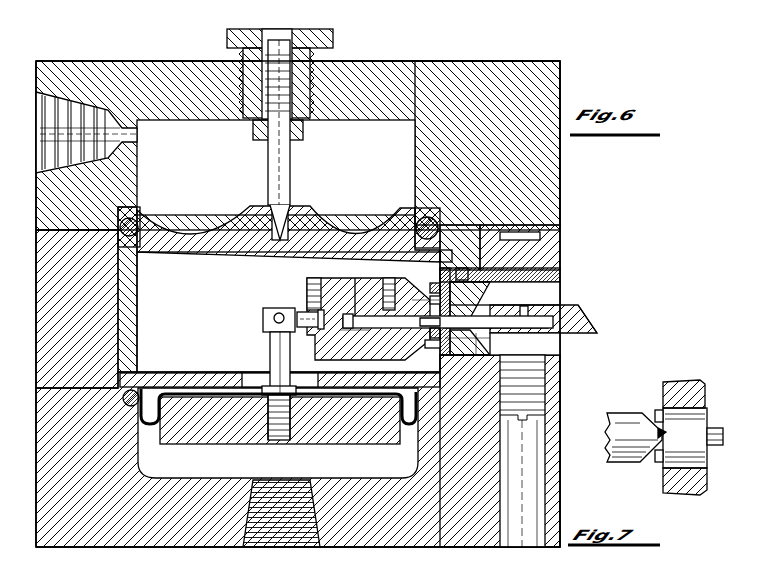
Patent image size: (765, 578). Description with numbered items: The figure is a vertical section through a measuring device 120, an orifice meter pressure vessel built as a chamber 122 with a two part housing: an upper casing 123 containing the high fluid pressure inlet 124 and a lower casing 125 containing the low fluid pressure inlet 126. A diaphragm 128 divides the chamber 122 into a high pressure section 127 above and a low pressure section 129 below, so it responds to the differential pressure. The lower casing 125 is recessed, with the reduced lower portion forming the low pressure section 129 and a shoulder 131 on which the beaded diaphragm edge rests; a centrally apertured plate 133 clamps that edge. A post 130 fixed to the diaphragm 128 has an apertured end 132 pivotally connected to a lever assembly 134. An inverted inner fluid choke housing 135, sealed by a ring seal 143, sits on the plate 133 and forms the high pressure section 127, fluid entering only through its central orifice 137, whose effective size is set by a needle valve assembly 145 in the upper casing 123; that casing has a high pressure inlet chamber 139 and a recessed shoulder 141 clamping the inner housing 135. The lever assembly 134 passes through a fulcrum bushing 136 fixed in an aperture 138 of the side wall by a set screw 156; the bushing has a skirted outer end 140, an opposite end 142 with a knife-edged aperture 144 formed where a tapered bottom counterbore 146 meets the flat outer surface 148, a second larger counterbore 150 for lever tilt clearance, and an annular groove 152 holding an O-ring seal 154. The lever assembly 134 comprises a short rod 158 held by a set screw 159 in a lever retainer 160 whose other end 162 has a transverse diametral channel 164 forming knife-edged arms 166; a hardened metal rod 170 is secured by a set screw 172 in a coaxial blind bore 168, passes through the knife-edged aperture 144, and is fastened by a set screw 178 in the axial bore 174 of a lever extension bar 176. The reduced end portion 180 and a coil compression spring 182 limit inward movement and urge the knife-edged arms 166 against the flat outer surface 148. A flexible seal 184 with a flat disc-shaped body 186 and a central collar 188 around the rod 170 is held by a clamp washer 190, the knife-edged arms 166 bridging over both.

In FIG. 6, the measuring device 120 is at (92, 57).
In FIG. 6, the chamber 122 is at (427, 68).
In FIG. 6, the upper casing 123 is at (172, 70).
In FIG. 6, the high fluid pressure inlet 124 is at (45, 160).
In FIG. 6, the lower casing 125 is at (85, 334).
In FIG. 6, the low fluid pressure inlet 126 is at (296, 540).
In FIG. 6, the high pressure section 127 is at (200, 314).
In FIG. 6, the diaphragm 128 is at (278, 416).
In FIG. 6, the low pressure section 129 is at (222, 462).
In FIG. 6, the post 130 is at (268, 345).
In FIG. 6, the shoulder 131 is at (135, 410).
In FIG. 6, the apertured end 132 is at (279, 312).
In FIG. 6, the plate 133 is at (185, 371).
In FIG. 6, the lever assembly 134 is at (545, 292).
In FIG. 6, the inner fluid choke housing 135 is at (204, 232).
In FIG. 6, the fulcrum bushing 136 is at (530, 266).
In FIG. 7, the fulcrum bushing 136 is at (676, 384).
In FIG. 6, the orifice 137 is at (290, 218).
In FIG. 6, the aperture 138 is at (556, 270).
In FIG. 7, the aperture 138 is at (706, 398).
In FIG. 6, the high pressure inlet chamber 139 is at (360, 124).
In FIG. 6, the skirted outer end 140 is at (556, 346).
In FIG. 6, the recessed shoulder 141 is at (416, 210).
In FIG. 6, the opposite end 142 is at (460, 247).
In FIG. 6, the ring seal 143 is at (137, 218).
In FIG. 6, the knife-edged aperture 144 is at (470, 342).
In FIG. 6, the needle valve assembly 145 is at (262, 148).
In FIG. 6, the tapered bottom counterbore 146 is at (505, 293).
In FIG. 6, the flat outer surface 148 is at (470, 300).
In FIG. 7, the flat outer surface 148 is at (659, 415).
In FIG. 6, the second larger counterbore 150 is at (545, 338).
In FIG. 6, the annular groove 152 is at (462, 272).
In FIG. 6, the O-ring seal 154 is at (458, 252).
In FIG. 6, the set screw 156 is at (528, 413).
In FIG. 6, the short rod 158 is at (300, 312).
In FIG. 6, the set screw 159 is at (312, 280).
In FIG. 6, the lever retainer 160 is at (332, 280).
In FIG. 7, the lever retainer 160 is at (628, 414).
In FIG. 6, the other end 162 is at (398, 283).
In FIG. 6, the transverse diametral channel 164 is at (428, 279).
In FIG. 6, the knife-edged arms 166 is at (430, 332).
In FIG. 7, the knife-edged arms 166 is at (667, 434).
In FIG. 6, the coaxial blind bore 168 is at (360, 332).
In FIG. 6, the hardened metal rod 170 is at (371, 307).
In FIG. 6, the set screw 172 is at (375, 283).
In FIG. 6, the axial bore 174 is at (556, 305).
In FIG. 6, the lever extension bar 176 is at (590, 318).
In FIG. 7, the lever extension bar 176 is at (717, 428).
In FIG. 6, the set screw 178 is at (525, 305).
In FIG. 6, the reduced end portion 180 is at (540, 340).
In FIG. 6, the coil compression spring 182 is at (476, 335).
In FIG. 6, the seal 184 is at (415, 291).
In FIG. 6, the flat disc-shaped body 186 is at (425, 340).
In FIG. 6, the central collar 188 is at (425, 312).
In FIG. 6, the clamp washer 190 is at (426, 291).
In FIG. 7, the clamp washer 190 is at (658, 460).